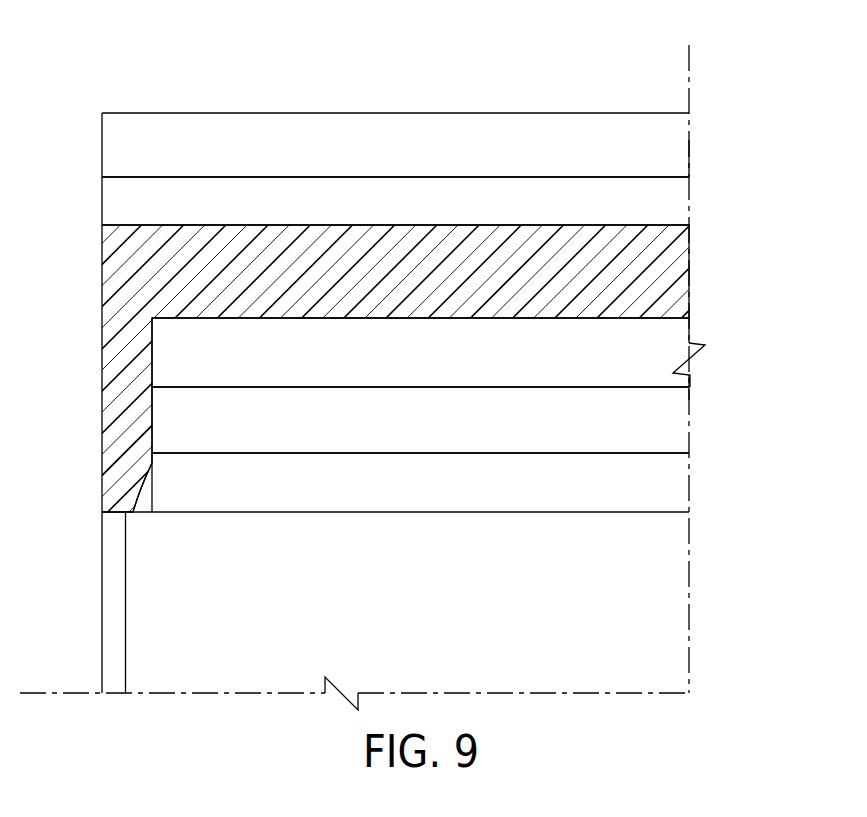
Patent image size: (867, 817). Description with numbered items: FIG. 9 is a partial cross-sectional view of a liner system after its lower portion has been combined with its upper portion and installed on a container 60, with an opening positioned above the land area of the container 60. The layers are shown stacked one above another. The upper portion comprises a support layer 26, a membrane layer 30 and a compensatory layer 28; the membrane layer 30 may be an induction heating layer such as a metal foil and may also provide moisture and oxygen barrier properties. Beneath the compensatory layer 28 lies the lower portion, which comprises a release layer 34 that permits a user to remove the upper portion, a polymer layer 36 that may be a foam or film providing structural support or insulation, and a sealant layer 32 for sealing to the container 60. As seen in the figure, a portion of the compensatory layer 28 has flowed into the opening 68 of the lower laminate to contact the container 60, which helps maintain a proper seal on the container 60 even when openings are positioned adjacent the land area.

The support layer 26 is at (680, 141).
The membrane layer 30 is at (680, 198).
The compensatory layer 28 is at (680, 271).
The release layer 34 is at (680, 334).
The polymer layer 36 is at (680, 428).
The sealant layer 32 is at (680, 491).
The opening 68 is at (142, 521).
The container 60 is at (101, 628).